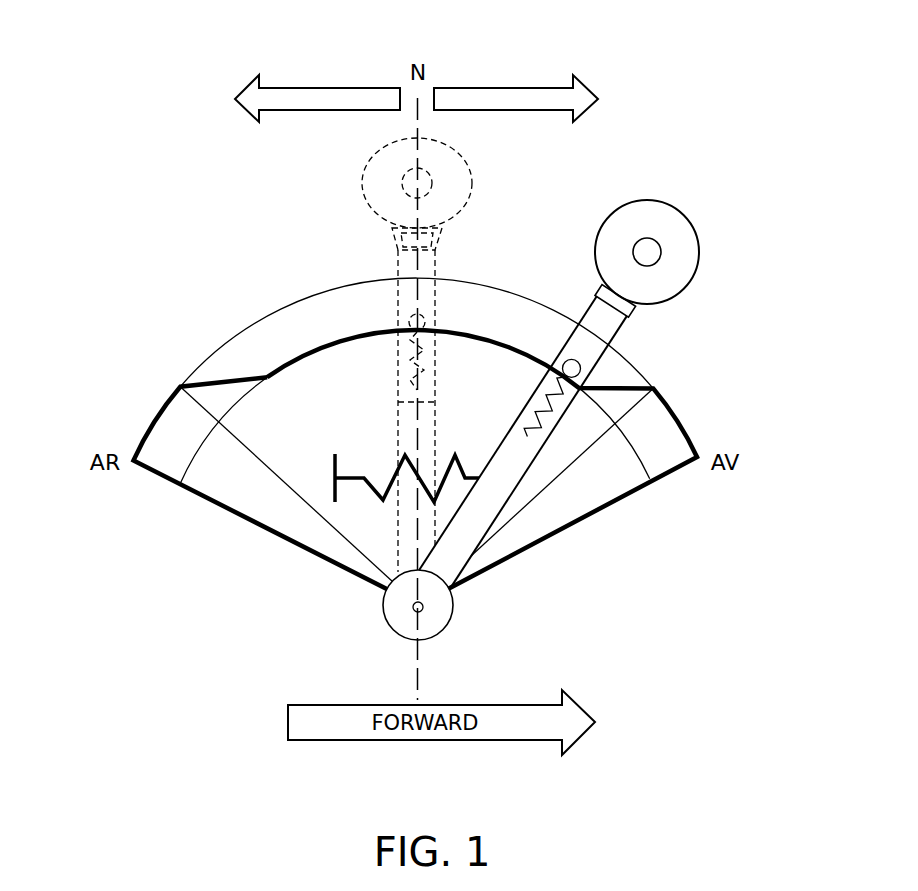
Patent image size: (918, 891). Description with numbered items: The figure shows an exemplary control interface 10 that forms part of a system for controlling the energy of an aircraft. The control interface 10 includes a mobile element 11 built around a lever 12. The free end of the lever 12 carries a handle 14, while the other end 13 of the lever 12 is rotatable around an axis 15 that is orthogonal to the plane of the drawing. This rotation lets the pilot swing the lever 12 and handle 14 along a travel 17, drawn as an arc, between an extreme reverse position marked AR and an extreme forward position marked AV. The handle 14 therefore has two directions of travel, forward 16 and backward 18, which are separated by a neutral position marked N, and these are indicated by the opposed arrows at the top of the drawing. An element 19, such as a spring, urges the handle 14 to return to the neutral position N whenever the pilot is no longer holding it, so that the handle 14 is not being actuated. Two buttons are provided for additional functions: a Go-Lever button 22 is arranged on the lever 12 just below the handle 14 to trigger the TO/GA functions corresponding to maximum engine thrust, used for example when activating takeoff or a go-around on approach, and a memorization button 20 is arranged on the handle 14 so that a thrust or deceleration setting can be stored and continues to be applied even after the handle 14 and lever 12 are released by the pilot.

The control interface 10 is at (188, 245).
The mobile element 11 is at (535, 509).
The lever 12 is at (577, 415).
The end of the lever 13 is at (389, 630).
The handle 14 is at (684, 225).
The axis 15 is at (421, 610).
The forward direction of travel 16 is at (500, 96).
The travel 17 is at (286, 306).
The backward direction of travel 18 is at (347, 97).
The spring 19 is at (370, 478).
The memorization button 20 is at (650, 250).
The Go-Lever button 22 is at (603, 282).